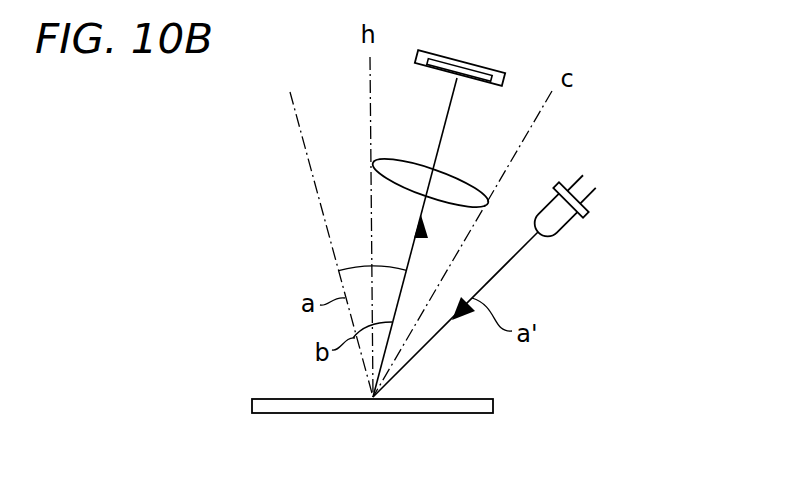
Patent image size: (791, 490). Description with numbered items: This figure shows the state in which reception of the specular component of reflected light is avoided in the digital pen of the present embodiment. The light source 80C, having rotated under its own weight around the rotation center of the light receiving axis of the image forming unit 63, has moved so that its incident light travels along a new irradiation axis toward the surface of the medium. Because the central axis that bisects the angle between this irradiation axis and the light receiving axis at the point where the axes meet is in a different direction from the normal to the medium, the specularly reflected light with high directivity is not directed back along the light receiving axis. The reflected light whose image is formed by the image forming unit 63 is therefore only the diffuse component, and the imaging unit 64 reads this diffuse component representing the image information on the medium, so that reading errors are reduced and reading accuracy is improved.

The image forming unit 63 is at (453, 170).
The imaging unit 64 is at (488, 68).
The light source 80C is at (562, 222).